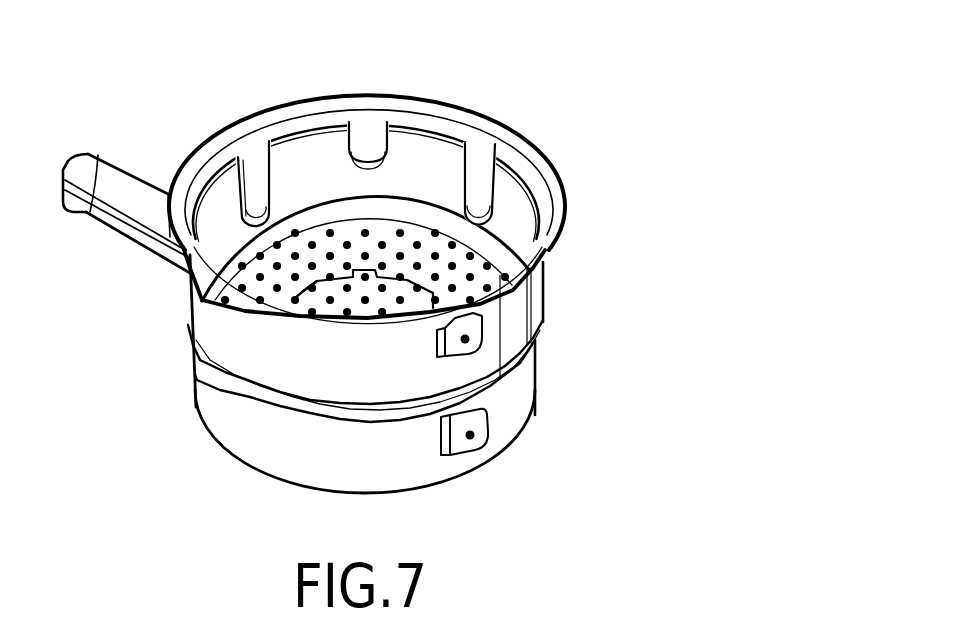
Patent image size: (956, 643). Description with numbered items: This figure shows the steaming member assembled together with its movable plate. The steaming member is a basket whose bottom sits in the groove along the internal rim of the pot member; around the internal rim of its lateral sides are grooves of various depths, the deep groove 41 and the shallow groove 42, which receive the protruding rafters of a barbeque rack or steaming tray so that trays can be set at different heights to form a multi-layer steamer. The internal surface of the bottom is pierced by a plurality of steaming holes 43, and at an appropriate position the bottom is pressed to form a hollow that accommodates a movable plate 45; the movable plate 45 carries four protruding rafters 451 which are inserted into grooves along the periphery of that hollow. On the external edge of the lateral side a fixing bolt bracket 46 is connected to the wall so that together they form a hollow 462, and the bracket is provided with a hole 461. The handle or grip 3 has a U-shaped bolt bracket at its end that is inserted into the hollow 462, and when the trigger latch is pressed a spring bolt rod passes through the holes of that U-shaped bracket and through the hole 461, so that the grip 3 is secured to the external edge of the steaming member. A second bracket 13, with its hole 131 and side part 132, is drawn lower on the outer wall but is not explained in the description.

The handle or grip 3 is at (103, 160).
The fastening clip 13 is at (503, 454).
The clip hole 131 is at (487, 437).
The clip flange 132 is at (442, 438).
The deep groove 41 is at (478, 176).
The shallow groove 42 is at (367, 140).
The steaming holes 43 is at (470, 252).
The movable plate 45 is at (293, 301).
The protruding rafters 451 is at (272, 297).
The fixing bolt bracket 46 is at (512, 331).
The hole 461 is at (483, 334).
The hollow 462 is at (437, 333).